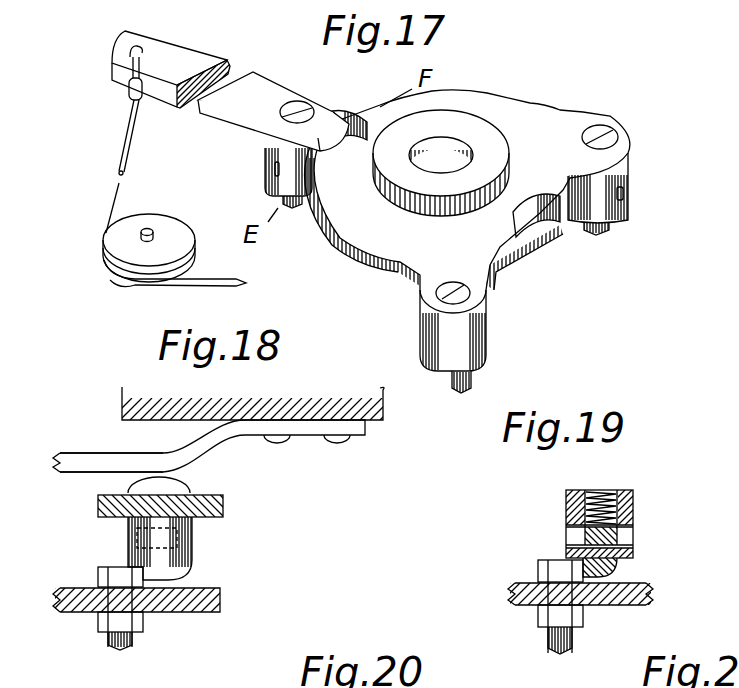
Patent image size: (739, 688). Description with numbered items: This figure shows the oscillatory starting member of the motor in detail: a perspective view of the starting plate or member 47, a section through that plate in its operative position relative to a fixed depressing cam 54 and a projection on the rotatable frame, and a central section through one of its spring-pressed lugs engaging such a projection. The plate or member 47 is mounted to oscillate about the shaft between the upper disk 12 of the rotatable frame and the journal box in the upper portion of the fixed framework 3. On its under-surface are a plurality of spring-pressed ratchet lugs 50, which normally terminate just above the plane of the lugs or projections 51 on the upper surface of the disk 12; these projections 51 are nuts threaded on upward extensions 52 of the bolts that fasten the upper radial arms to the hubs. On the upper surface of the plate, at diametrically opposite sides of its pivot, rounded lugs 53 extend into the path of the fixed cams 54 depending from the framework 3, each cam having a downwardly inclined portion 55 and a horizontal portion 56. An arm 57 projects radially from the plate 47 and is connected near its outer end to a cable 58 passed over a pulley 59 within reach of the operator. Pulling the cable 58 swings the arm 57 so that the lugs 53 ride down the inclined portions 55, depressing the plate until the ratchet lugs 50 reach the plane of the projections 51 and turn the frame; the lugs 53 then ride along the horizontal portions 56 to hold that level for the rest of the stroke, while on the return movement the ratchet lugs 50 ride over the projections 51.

In FIG. 18, the framework 3 is at (288, 408).
In FIG. 18, the upper disk 12 is at (190, 604).
In FIG. 19, the upper disk 12 is at (523, 605).
In FIG. 17, the oscillating member or plate 47 is at (520, 126).
In FIG. 18, the oscillating member or plate 47 is at (208, 512).
In FIG. 17, the spring-pressed ratchet lugs 50 is at (294, 208).
In FIG. 18, the spring-pressed ratchet lugs 50 is at (200, 548).
In FIG. 19, the spring-pressed ratchet lugs 50 is at (620, 568).
In FIG. 18, the lugs or projections 51 is at (135, 585).
In FIG. 19, the lugs or projections 51 is at (547, 563).
In FIG. 18, the upward extensions of bolts 52 is at (122, 646).
In FIG. 19, the upward extensions of bolts 52 is at (575, 633).
In FIG. 17, the rounded lugs 53 is at (338, 118).
In FIG. 18, the rounded lugs 53 is at (187, 482).
In FIG. 18, the fixed cams 54 is at (111, 436).
In FIG. 18, the downwardly inclined portion 55 is at (213, 443).
In FIG. 18, the horizontal portion 56 is at (75, 470).
In FIG. 17, the arm 57 is at (232, 125).
In FIG. 17, the cable 58 is at (125, 145).
In FIG. 17, the pulley 59 is at (123, 252).